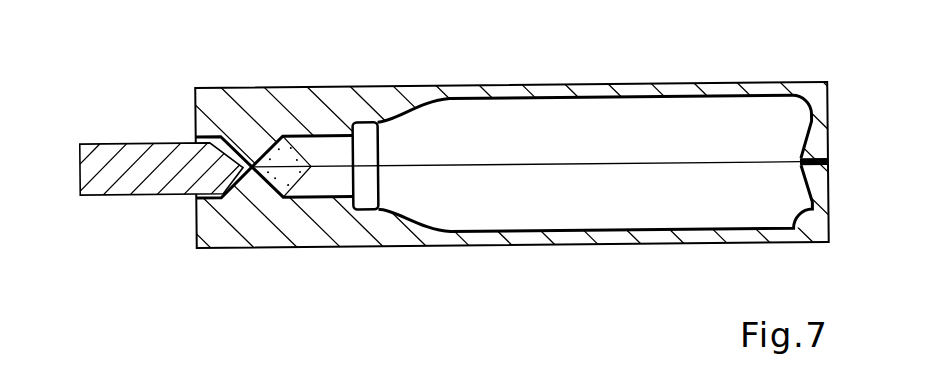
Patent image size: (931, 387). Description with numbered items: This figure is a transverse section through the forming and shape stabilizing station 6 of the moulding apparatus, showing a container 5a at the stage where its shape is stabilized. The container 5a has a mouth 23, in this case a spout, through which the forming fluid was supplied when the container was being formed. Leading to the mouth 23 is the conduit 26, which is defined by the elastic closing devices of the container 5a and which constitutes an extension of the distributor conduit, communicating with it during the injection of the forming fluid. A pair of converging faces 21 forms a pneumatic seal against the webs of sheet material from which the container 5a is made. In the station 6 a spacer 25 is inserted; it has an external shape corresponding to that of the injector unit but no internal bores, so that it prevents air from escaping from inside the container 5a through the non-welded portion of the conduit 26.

The forming and shape stabilizing station 6 is at (508, 287).
The container 5a is at (645, 229).
The faces 21 is at (243, 152).
The conduit 26 is at (293, 180).
The mouth 23 is at (333, 150).
The spacer 25 is at (118, 252).